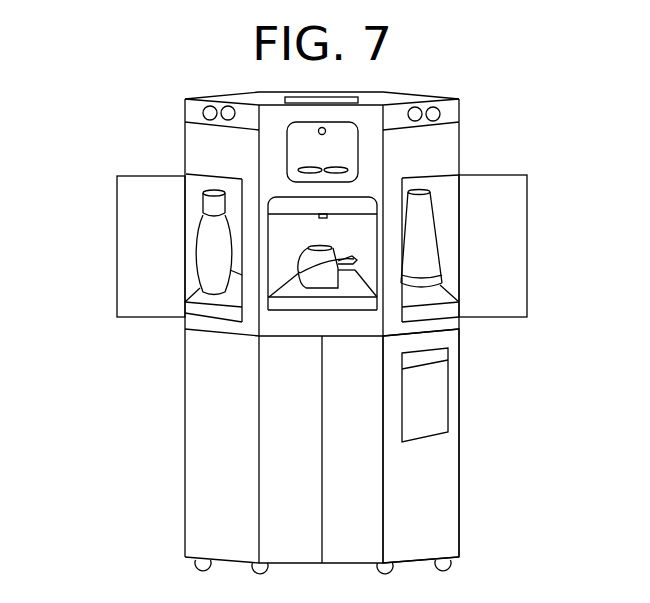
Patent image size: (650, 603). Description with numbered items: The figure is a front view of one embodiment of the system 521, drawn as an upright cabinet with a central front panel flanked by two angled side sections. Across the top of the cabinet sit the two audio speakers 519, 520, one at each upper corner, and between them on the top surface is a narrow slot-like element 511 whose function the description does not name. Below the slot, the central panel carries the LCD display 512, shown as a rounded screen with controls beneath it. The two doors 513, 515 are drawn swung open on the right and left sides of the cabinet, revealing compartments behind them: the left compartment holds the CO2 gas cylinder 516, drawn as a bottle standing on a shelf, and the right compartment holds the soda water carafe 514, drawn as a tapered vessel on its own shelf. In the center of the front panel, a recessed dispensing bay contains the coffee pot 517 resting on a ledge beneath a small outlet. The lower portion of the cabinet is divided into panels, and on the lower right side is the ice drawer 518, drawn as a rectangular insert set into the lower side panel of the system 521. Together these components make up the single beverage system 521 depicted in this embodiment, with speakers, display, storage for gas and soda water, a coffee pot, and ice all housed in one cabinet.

The top slot 511 is at (353, 93).
The LCD display 512 is at (303, 152).
The door 513 is at (492, 188).
The soda water carafe 514 is at (440, 258).
The door 515 is at (132, 212).
The CO2 gas cylinder 516 is at (212, 270).
The coffee pot 517 is at (315, 283).
The ice drawer 518 is at (430, 419).
The audio speaker 519 is at (450, 110).
The audio speaker 520 is at (193, 108).
The system 521 is at (432, 491).